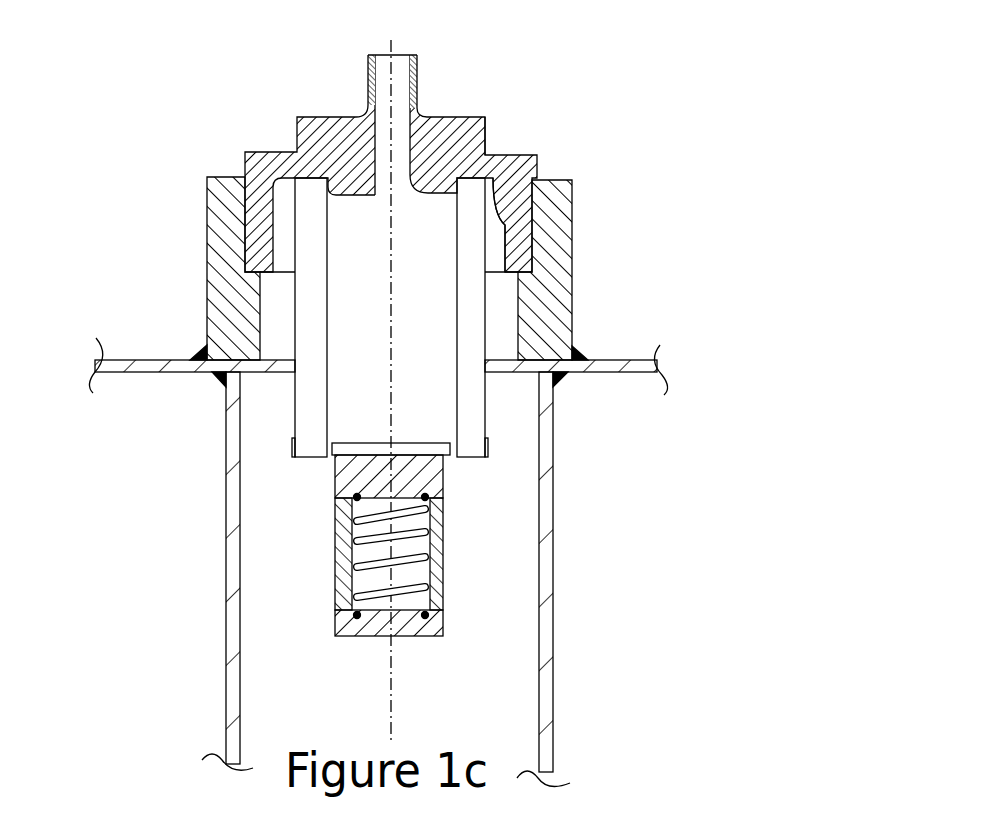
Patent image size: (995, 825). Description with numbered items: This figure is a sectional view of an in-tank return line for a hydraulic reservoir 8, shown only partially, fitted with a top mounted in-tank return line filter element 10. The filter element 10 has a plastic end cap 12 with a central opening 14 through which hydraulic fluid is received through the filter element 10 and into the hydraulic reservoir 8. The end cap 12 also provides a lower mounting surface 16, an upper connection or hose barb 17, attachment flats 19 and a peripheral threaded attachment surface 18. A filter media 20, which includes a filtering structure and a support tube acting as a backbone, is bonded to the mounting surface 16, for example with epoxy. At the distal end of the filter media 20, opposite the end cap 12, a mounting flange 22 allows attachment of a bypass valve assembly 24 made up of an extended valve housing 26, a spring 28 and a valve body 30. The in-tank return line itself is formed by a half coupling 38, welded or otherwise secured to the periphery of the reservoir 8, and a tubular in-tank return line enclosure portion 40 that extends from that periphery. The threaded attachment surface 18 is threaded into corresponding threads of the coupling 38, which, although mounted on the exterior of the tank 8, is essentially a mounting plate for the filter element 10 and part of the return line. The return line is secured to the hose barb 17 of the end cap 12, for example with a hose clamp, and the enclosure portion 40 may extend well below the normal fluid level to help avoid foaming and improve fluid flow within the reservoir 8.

The hydraulic reservoir 8 is at (130, 357).
The in-tank return line filter element 10 is at (201, 97).
The plastic end cap 12 is at (543, 148).
The central opening 14 is at (370, 175).
The lower mounting surface 16 is at (513, 223).
The upper connection or hose barb 17 is at (418, 57).
The peripheral threaded attachment surface 18 is at (518, 248).
The attachment flats 19 is at (485, 136).
The filter media 20 is at (487, 400).
The mounting flange 22 is at (313, 460).
The bypass valve assembly 24 is at (445, 582).
The extended valve housing 26 is at (417, 636).
The spring 28 is at (365, 597).
The valve body 30 is at (372, 493).
The half coupling 38 is at (205, 252).
The tubular in-tank return line enclosure portion 40 is at (227, 512).